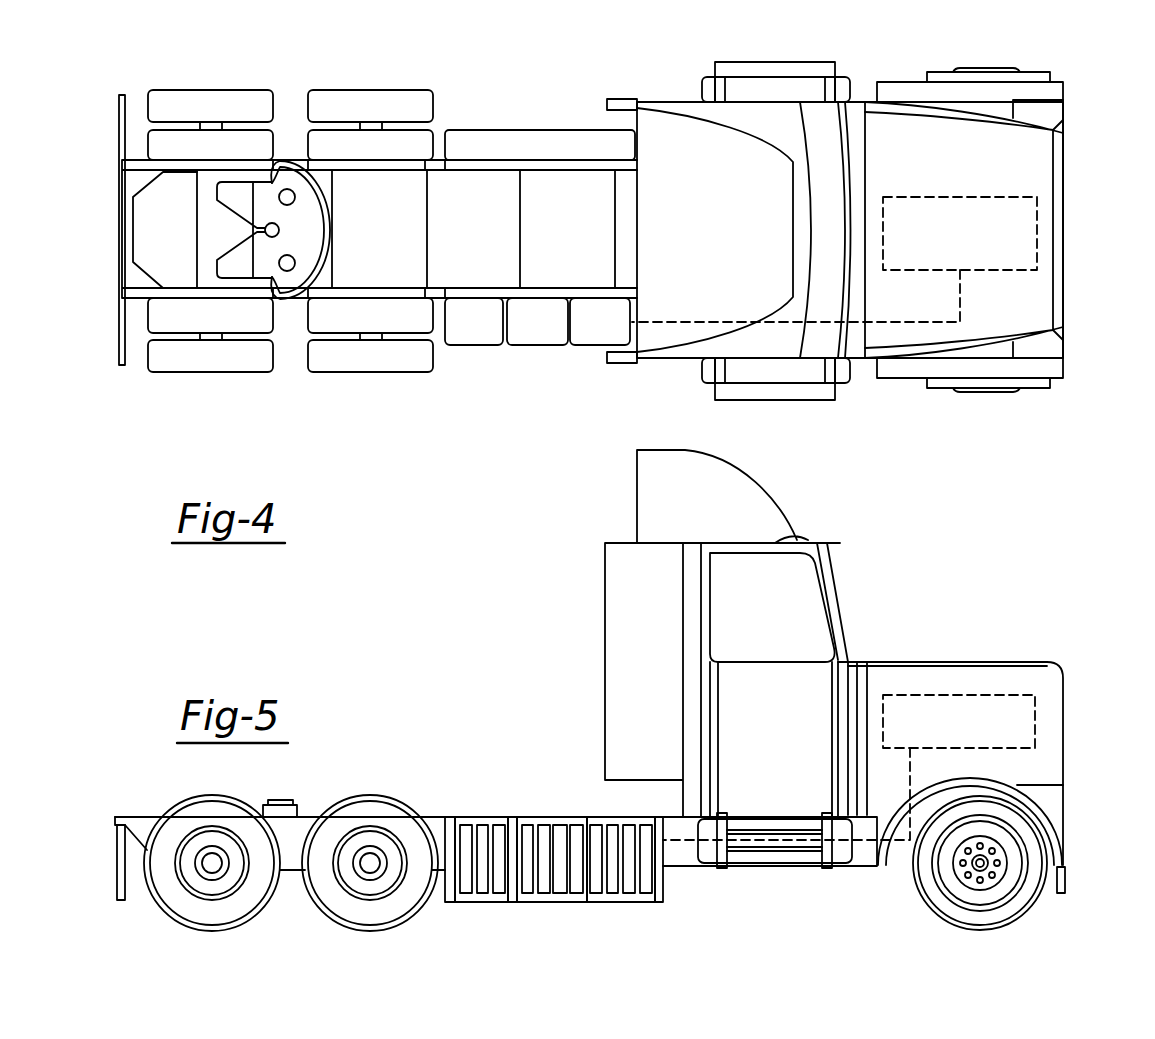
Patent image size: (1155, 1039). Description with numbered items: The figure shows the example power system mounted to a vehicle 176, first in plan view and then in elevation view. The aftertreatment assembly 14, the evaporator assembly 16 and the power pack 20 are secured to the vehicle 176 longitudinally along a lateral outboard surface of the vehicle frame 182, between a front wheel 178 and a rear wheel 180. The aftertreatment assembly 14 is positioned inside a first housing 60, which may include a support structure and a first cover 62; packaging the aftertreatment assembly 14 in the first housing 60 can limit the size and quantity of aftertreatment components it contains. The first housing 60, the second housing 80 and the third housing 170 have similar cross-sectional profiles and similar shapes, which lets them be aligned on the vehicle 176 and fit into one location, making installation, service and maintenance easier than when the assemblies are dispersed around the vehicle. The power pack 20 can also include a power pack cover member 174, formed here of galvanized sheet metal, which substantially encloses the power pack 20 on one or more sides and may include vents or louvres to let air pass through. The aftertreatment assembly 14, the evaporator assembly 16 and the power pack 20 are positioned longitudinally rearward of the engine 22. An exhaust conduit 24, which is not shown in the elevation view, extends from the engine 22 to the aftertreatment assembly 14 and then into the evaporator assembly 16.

In FIG. 4, the aftertreatment assembly 14 is at (597, 350).
In FIG. 5, the aftertreatment assembly 14 is at (618, 824).
In FIG. 4, the evaporator assembly 16 is at (538, 350).
In FIG. 5, the evaporator assembly 16 is at (552, 847).
In FIG. 4, the power pack 20 is at (463, 350).
In FIG. 5, the power pack 20 is at (491, 824).
In FIG. 4, the engine 22 is at (1027, 248).
In FIG. 5, the engine 22 is at (913, 695).
In FIG. 4, the exhaust conduit 24 is at (890, 322).
In FIG. 5, the exhaust conduit 24 is at (865, 843).
In FIG. 4, the first housing 60 is at (596, 305).
In FIG. 5, the first housing 60 is at (598, 822).
In FIG. 5, the first cover 62 is at (633, 822).
In FIG. 4, the second housing 80 is at (552, 305).
In FIG. 5, the second housing 80 is at (550, 822).
In FIG. 4, the third housing 170 is at (462, 305).
In FIG. 5, the third housing 170 is at (487, 822).
In FIG. 5, the power pack cover member 174 is at (502, 822).
In FIG. 4, the vehicle 176 is at (494, 66).
In FIG. 5, the vehicle 176 is at (1000, 594).
In FIG. 4, the front wheel 178 is at (1057, 375).
In FIG. 5, the front wheel 178 is at (1015, 912).
In FIG. 4, the rear wheel 180 is at (178, 363).
In FIG. 5, the rear wheel 180 is at (200, 813).
In FIG. 4, the vehicle frame 182 is at (405, 292).
In FIG. 5, the vehicle frame 182 is at (428, 812).